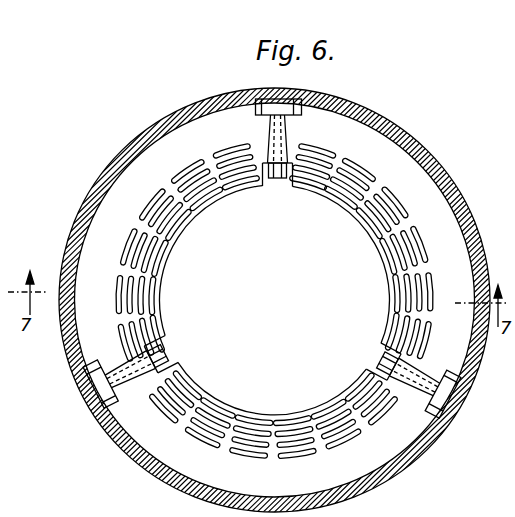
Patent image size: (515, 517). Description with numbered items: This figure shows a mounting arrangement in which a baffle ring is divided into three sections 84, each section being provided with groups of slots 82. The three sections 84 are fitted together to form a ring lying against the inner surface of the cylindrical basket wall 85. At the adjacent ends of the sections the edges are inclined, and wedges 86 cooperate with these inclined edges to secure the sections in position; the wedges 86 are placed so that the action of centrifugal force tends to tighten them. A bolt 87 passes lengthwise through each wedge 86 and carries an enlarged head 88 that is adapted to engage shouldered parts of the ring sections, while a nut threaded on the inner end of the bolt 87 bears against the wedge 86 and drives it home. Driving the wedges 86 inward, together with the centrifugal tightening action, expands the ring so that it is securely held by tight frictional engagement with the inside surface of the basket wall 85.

The slots 82 is at (274, 300).
The baffle ring section 84 is at (281, 300).
The basket wall 85 is at (144, 153).
The wedge 86 is at (295, 293).
The bolt 87 is at (284, 188).
The enlarged head 88 is at (321, 97).